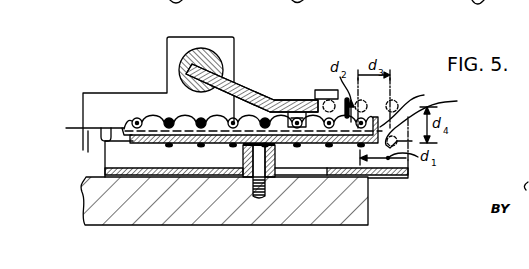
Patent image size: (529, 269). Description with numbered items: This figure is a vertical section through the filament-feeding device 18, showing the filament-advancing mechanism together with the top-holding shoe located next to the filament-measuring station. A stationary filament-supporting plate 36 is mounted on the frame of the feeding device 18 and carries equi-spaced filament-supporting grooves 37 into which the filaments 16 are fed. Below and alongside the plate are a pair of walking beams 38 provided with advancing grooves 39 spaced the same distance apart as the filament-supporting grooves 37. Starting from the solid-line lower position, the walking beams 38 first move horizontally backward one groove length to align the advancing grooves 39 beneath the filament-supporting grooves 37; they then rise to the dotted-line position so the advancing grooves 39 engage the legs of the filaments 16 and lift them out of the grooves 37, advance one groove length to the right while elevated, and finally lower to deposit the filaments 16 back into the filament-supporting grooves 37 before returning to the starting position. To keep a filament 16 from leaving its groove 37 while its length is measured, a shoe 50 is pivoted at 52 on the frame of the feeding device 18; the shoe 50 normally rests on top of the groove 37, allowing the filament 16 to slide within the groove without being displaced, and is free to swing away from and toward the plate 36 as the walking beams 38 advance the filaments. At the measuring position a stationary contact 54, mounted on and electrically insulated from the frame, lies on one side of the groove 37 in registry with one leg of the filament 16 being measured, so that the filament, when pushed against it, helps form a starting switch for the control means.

The filament 16 is at (203, 121).
The filament-feeding device 18 is at (366, 212).
The filament-supporting plate 36 is at (412, 105).
The filament-supporting grooves 37 is at (164, 120).
The walking beams 38 is at (104, 155).
The advancing grooves 39 is at (262, 123).
The shoe 50 is at (239, 86).
The pivot 52 is at (211, 48).
The stationary contact 54 is at (287, 100).